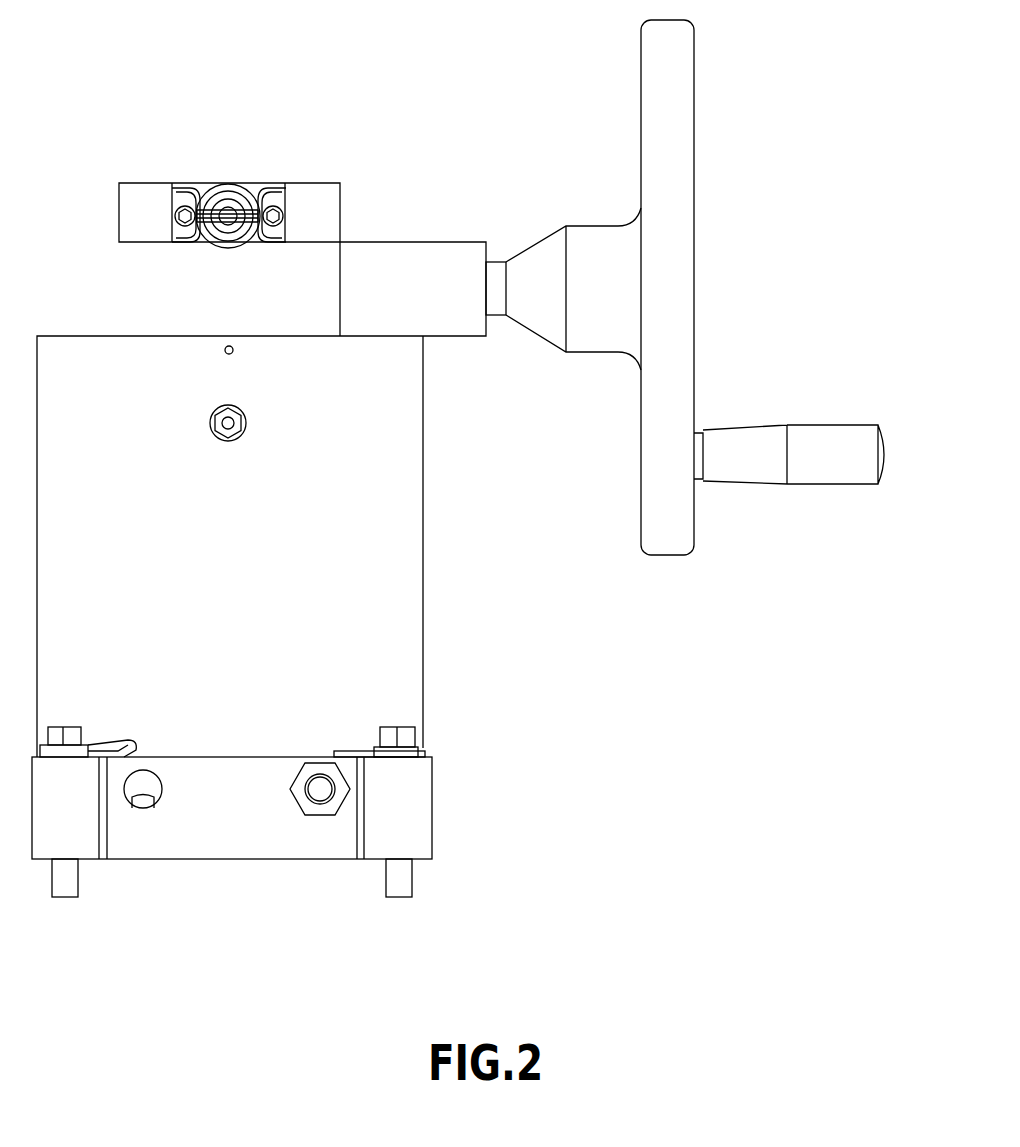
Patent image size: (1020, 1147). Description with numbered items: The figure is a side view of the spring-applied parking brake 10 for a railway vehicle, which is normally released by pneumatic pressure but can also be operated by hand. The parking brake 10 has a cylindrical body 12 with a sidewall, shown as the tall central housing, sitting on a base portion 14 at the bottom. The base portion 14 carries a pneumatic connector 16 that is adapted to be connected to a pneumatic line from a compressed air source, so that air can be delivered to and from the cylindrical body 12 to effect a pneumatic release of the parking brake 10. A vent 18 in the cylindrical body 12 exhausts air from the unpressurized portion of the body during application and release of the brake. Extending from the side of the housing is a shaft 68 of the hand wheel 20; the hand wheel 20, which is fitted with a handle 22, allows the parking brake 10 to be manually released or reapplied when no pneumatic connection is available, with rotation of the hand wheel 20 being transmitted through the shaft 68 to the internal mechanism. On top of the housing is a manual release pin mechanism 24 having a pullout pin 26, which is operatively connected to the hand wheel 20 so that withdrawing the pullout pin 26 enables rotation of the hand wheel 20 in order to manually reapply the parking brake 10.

The parking brake 10 is at (465, 470).
The cylindrical body 12 is at (398, 608).
The base portion 14 is at (432, 818).
The pneumatic connector 16 is at (313, 797).
The vent 18 is at (222, 438).
The hand wheel 20 is at (688, 133).
The handle 22 is at (819, 436).
The manual release pin mechanism 24 is at (258, 163).
The pullout pin 26 is at (243, 208).
The shaft 68 is at (500, 260).